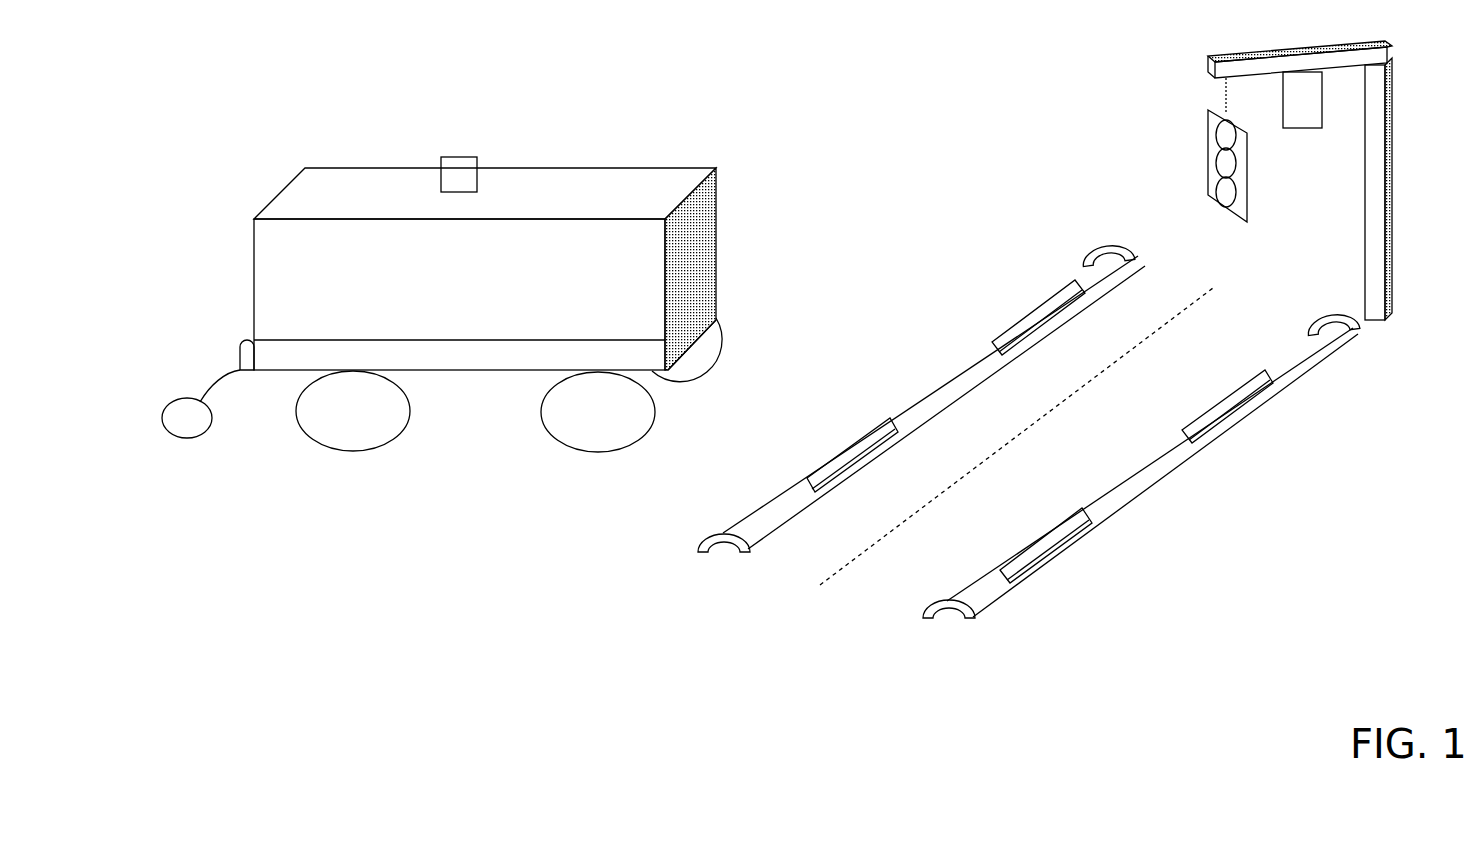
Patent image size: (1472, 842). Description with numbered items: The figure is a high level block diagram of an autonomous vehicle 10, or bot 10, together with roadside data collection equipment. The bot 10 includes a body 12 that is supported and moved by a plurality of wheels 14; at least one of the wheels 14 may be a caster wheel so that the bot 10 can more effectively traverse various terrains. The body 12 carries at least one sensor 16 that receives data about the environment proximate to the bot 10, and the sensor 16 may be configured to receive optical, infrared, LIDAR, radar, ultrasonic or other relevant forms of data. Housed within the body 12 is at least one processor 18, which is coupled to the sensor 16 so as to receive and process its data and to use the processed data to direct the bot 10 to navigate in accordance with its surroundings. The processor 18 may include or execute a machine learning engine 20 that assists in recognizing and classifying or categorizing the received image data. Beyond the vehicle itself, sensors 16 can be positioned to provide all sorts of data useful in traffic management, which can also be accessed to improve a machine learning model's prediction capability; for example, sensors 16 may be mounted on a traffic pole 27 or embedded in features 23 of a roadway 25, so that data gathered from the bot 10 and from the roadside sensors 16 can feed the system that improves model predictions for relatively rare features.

The autonomous vehicle 10 is at (128, 89).
The body 12 is at (330, 185).
The wheels 14 is at (615, 447).
The sensor 16 is at (446, 160).
The processor 18 is at (290, 352).
The machine learning engine 20 is at (638, 372).
The features 23 is at (925, 396).
The roadway 25 is at (888, 592).
The traffic pole 27 is at (1368, 230).